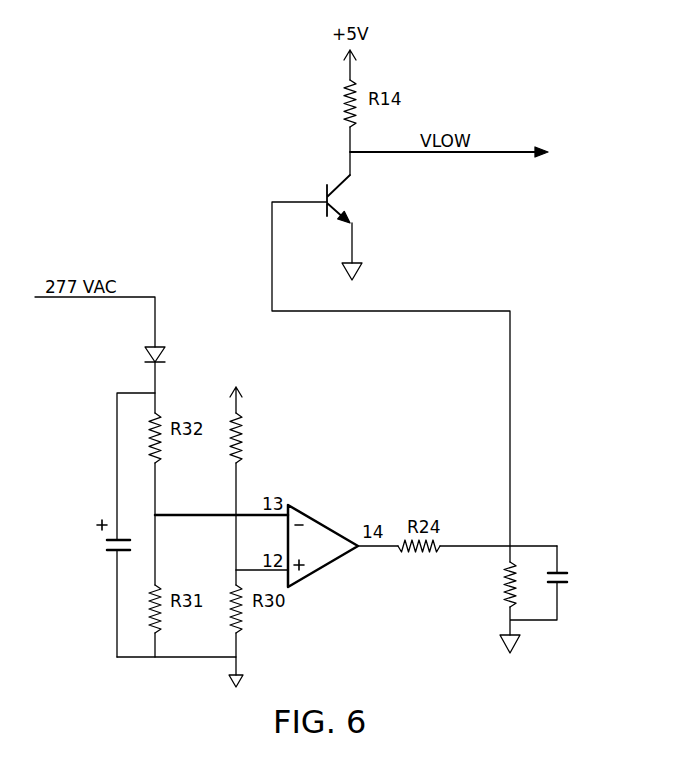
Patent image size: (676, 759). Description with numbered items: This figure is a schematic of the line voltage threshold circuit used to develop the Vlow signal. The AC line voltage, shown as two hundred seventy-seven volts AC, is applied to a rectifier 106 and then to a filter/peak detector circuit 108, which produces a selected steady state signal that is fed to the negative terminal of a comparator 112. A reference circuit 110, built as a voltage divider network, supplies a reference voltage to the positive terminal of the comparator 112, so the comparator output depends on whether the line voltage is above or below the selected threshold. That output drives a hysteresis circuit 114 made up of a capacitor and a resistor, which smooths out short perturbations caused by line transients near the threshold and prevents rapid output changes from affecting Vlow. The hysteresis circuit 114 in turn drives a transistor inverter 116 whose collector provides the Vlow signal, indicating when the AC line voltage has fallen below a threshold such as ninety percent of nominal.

The rectifier 106 is at (130, 360).
The filter/peak detector circuit 108 is at (95, 487).
The reference circuit 110 is at (256, 404).
The comparator 112 is at (312, 517).
The hysteresis circuit 114 is at (538, 522).
The transistor inverter 116 is at (310, 165).